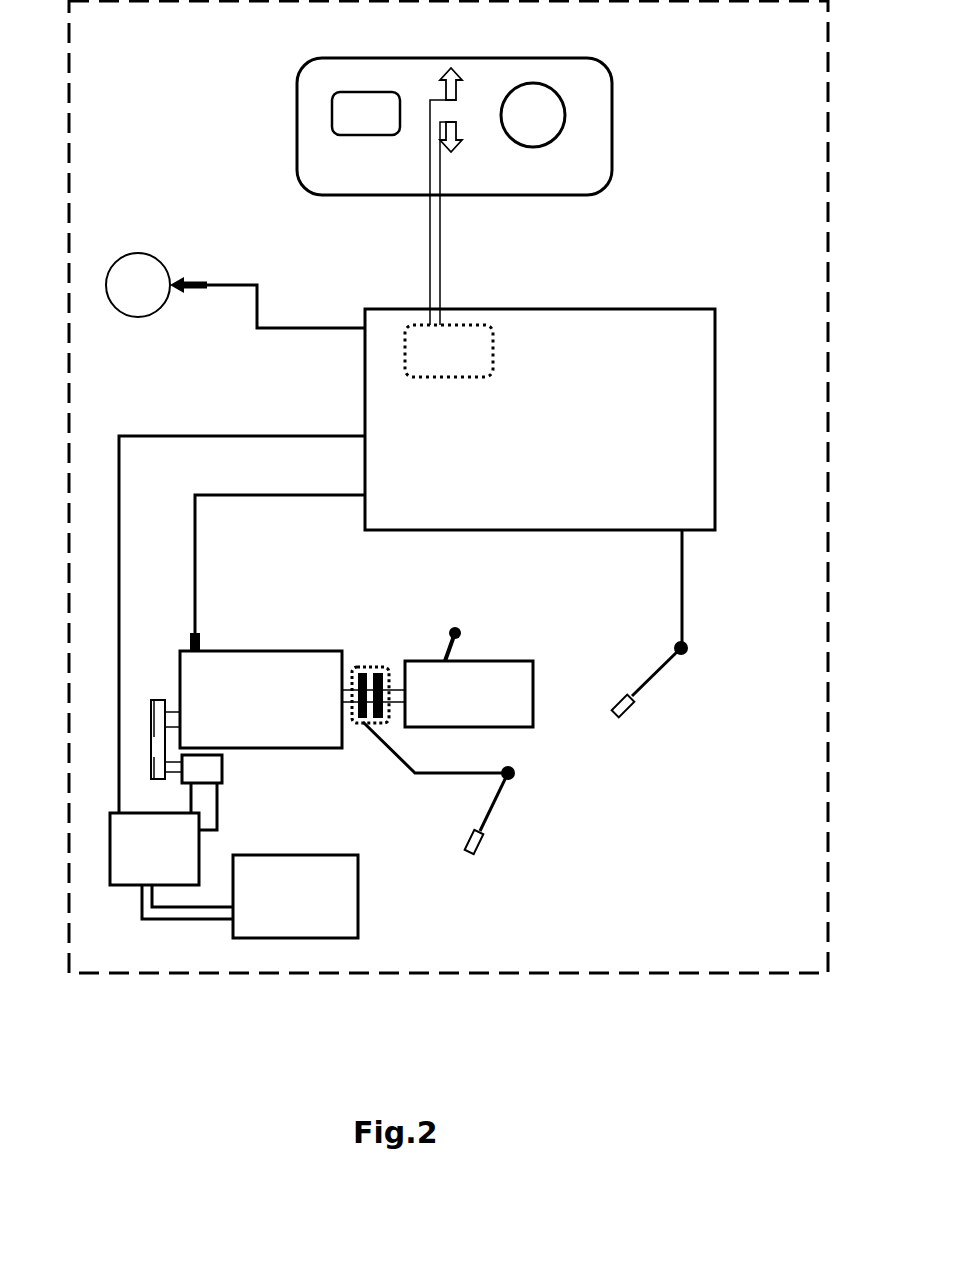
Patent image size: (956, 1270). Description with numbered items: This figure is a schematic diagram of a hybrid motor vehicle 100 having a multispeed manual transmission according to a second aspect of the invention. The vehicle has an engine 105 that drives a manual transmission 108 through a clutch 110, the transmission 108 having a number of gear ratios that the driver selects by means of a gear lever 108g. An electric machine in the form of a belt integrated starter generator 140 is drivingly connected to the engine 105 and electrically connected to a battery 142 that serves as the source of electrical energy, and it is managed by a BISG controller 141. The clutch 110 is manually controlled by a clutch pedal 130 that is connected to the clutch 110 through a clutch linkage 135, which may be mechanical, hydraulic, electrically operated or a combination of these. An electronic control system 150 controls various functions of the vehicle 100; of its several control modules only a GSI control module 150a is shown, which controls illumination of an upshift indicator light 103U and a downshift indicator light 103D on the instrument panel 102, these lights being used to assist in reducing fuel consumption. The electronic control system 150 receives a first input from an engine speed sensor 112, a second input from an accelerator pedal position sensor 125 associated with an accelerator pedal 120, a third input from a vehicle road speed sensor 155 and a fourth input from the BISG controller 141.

The motor vehicle 100 is at (298, 984).
The instrument panel 102 is at (414, 126).
The upshift indicator light 103U is at (456, 78).
The downshift indicator light 103D is at (454, 146).
The vehicle road speed sensor 155 is at (192, 280).
The electronic control system 150 is at (563, 420).
The GSI control module 150a is at (405, 350).
The engine speed sensor 112 is at (200, 640).
The engine 105 is at (285, 702).
The clutch 110 is at (365, 667).
The manual transmission 108 is at (493, 700).
The gear lever 108g is at (500, 631).
The belt integrated starter generator 140 is at (222, 772).
The BISG controller 141 is at (178, 853).
The battery 142 is at (318, 893).
The clutch linkage 135 is at (425, 778).
The clutch pedal 130 is at (498, 810).
The accelerator pedal position sensor 125 is at (688, 652).
The accelerator pedal 120 is at (652, 683).